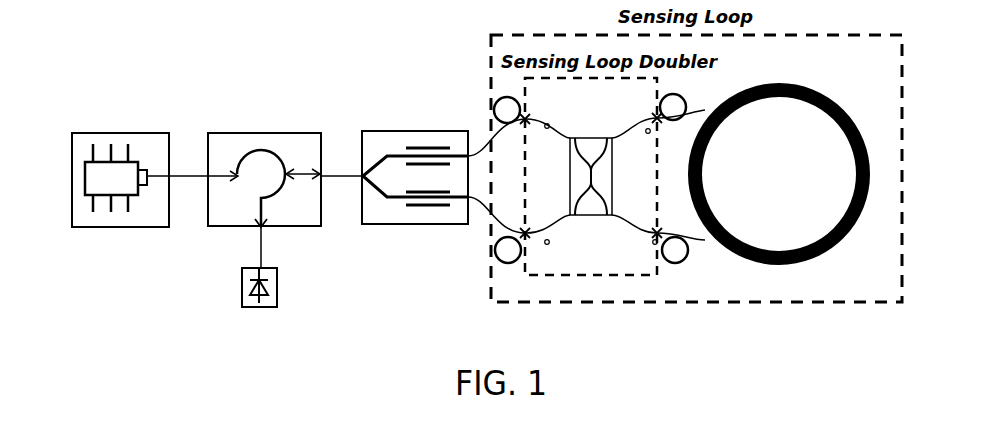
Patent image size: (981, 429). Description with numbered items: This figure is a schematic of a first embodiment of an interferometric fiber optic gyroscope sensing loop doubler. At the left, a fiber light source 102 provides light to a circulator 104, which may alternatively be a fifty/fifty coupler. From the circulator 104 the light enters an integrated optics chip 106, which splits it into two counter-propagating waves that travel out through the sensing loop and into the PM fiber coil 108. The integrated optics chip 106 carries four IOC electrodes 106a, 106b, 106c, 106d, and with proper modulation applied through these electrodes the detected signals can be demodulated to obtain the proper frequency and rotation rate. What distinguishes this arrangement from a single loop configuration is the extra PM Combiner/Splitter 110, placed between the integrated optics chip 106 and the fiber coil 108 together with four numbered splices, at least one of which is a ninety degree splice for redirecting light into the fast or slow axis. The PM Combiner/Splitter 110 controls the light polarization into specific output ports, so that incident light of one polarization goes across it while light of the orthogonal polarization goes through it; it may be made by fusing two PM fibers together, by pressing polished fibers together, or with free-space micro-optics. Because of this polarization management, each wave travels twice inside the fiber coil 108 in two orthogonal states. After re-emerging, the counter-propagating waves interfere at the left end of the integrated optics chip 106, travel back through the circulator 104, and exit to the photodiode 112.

The fiber light source 102 is at (157, 133).
The circulator 104 is at (320, 133).
The integrated optics chip 106 is at (450, 131).
The IOC electrode 106a is at (408, 148).
The IOC electrode 106b is at (428, 165).
The IOC electrode 106c is at (450, 194).
The IOC electrode 106d is at (415, 206).
The fiber coil 108 is at (822, 96).
The PM Combiner/Splitter 110 is at (627, 277).
The photodiode 112 is at (277, 283).